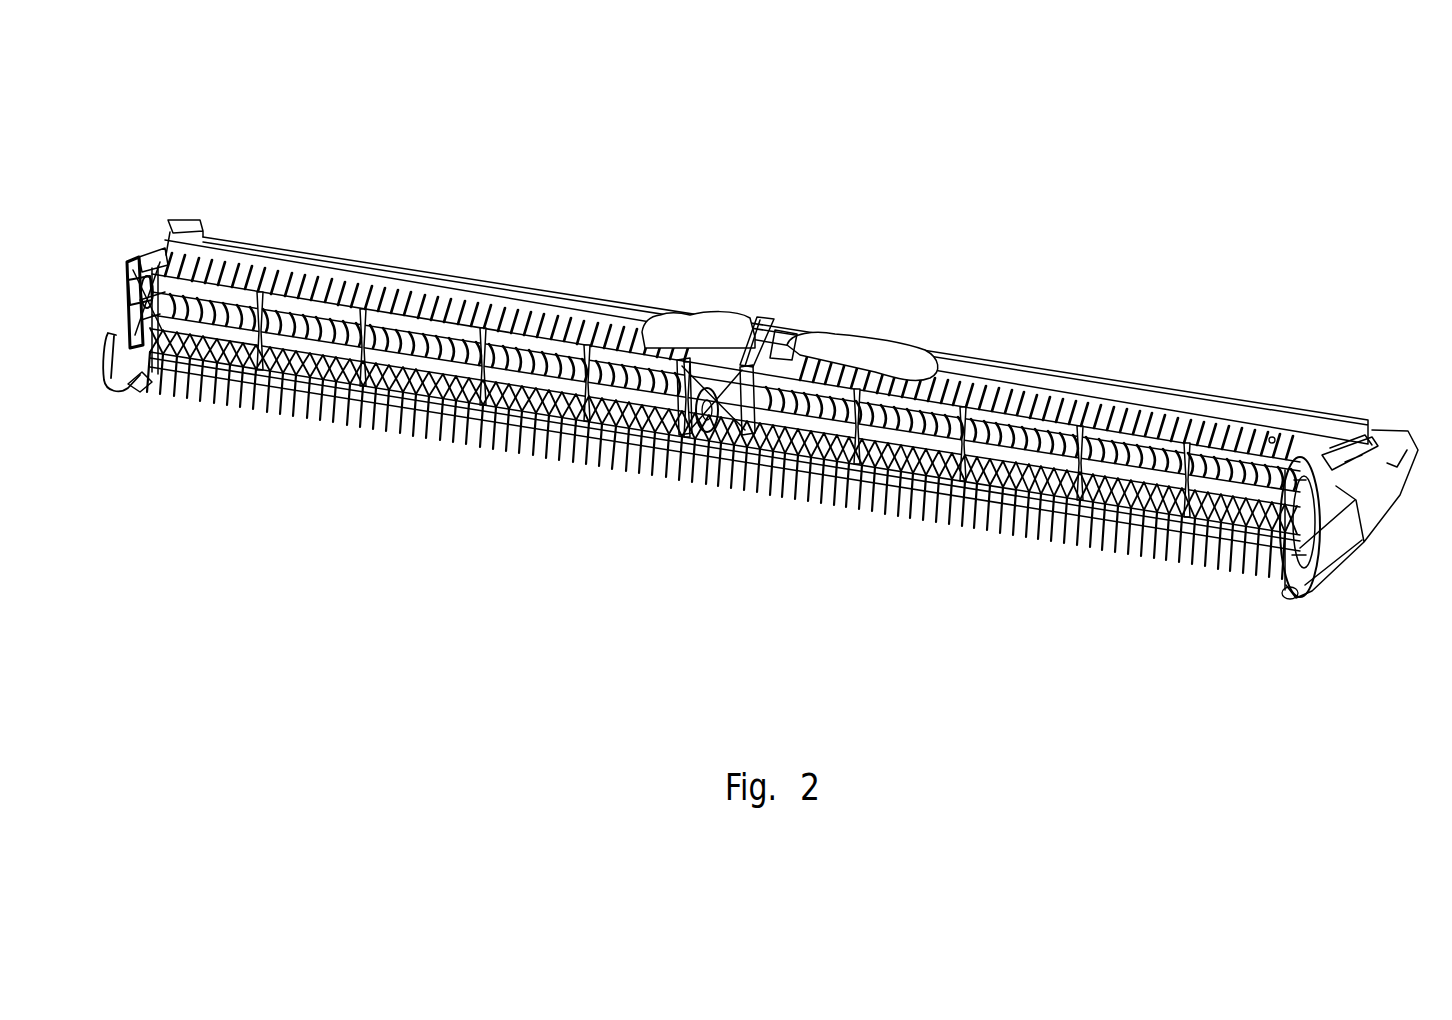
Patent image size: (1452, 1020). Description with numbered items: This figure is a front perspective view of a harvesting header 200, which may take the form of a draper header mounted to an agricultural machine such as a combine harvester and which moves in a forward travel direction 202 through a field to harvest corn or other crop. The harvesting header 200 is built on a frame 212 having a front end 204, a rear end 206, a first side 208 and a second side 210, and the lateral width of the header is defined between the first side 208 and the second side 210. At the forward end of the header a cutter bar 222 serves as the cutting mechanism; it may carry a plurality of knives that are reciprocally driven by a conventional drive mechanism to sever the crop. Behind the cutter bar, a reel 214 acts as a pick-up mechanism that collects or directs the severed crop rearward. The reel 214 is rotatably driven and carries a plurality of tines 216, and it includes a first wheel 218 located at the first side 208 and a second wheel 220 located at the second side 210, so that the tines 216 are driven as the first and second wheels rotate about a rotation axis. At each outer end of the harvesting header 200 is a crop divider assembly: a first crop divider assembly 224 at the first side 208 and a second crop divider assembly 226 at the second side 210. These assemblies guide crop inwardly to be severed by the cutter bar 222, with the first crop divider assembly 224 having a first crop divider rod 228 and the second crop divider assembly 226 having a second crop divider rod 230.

The harvesting header 200 is at (902, 185).
The forward travel direction 202 is at (632, 635).
The front end 204 is at (575, 525).
The rear end 206 is at (742, 292).
The first side 208 is at (122, 235).
The second side 210 is at (1385, 552).
The frame 212 is at (1010, 378).
The reel 214 is at (1117, 483).
The tines 216 is at (1158, 422).
The first wheel 218 is at (147, 250).
The second wheel 220 is at (1325, 467).
The cutter bar 222 is at (962, 528).
The first crop divider assembly 224 is at (133, 387).
The second crop divider assembly 226 is at (1325, 588).
The first crop divider rod 228 is at (107, 353).
The second crop divider rod 230 is at (1285, 587).